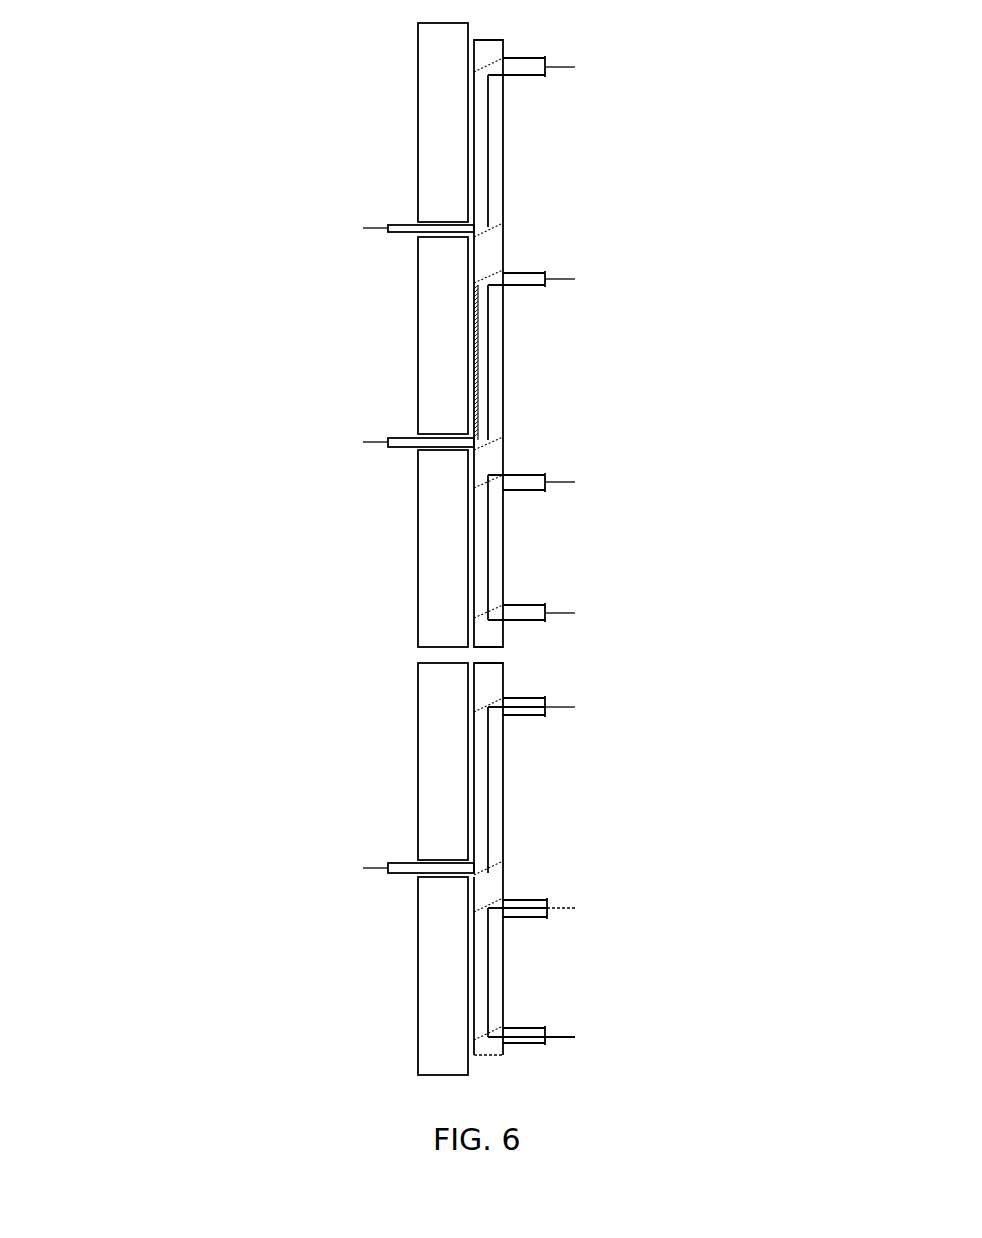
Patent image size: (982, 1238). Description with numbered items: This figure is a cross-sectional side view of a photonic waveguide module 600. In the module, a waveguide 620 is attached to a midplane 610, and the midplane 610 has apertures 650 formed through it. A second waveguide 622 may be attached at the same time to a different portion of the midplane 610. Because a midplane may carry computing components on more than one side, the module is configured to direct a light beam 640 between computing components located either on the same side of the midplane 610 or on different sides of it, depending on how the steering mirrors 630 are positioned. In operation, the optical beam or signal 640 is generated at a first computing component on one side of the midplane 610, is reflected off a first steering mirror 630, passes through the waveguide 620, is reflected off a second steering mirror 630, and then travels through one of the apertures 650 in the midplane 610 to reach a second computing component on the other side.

The photonic waveguide module 600 is at (250, 165).
The midplane 610 is at (446, 347).
The waveguide 620 is at (495, 555).
The second waveguide 622 is at (495, 817).
The steering mirrors 630 is at (490, 278).
The light beam 640 is at (488, 140).
The apertures 650 is at (385, 656).